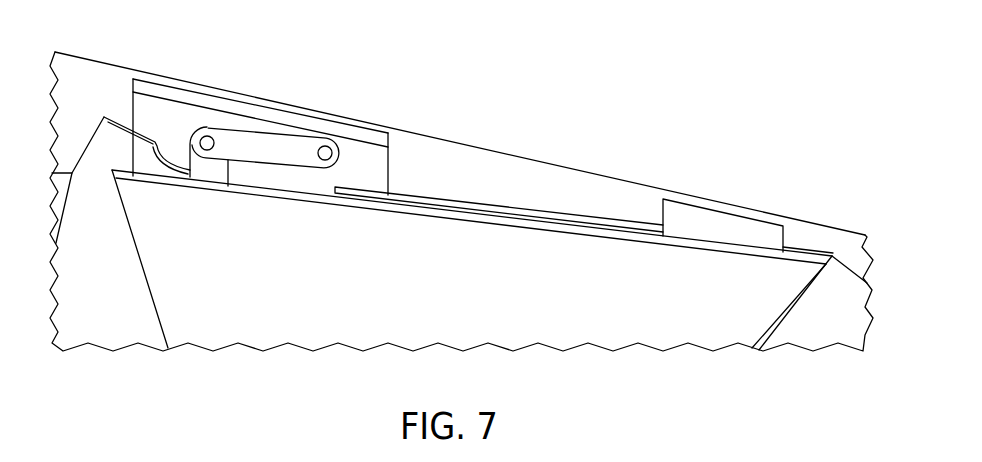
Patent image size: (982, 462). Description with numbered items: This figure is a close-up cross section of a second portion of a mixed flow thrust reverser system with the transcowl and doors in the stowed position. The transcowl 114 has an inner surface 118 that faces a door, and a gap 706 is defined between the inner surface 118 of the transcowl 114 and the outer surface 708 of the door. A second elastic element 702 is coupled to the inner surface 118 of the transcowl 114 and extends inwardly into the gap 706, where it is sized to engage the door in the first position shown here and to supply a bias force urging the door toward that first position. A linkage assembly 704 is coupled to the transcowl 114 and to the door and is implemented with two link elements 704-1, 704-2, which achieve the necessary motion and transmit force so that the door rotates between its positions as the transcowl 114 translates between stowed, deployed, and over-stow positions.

The transcowl 114 is at (467, 145).
The inner surface 118 is at (517, 220).
The second elastic element 702 is at (703, 222).
The linkage assembly 704 is at (260, 115).
The link element 704-1 is at (203, 127).
The link element 704-2 is at (287, 147).
The gap 706 is at (798, 249).
The outer surface 708 is at (432, 205).